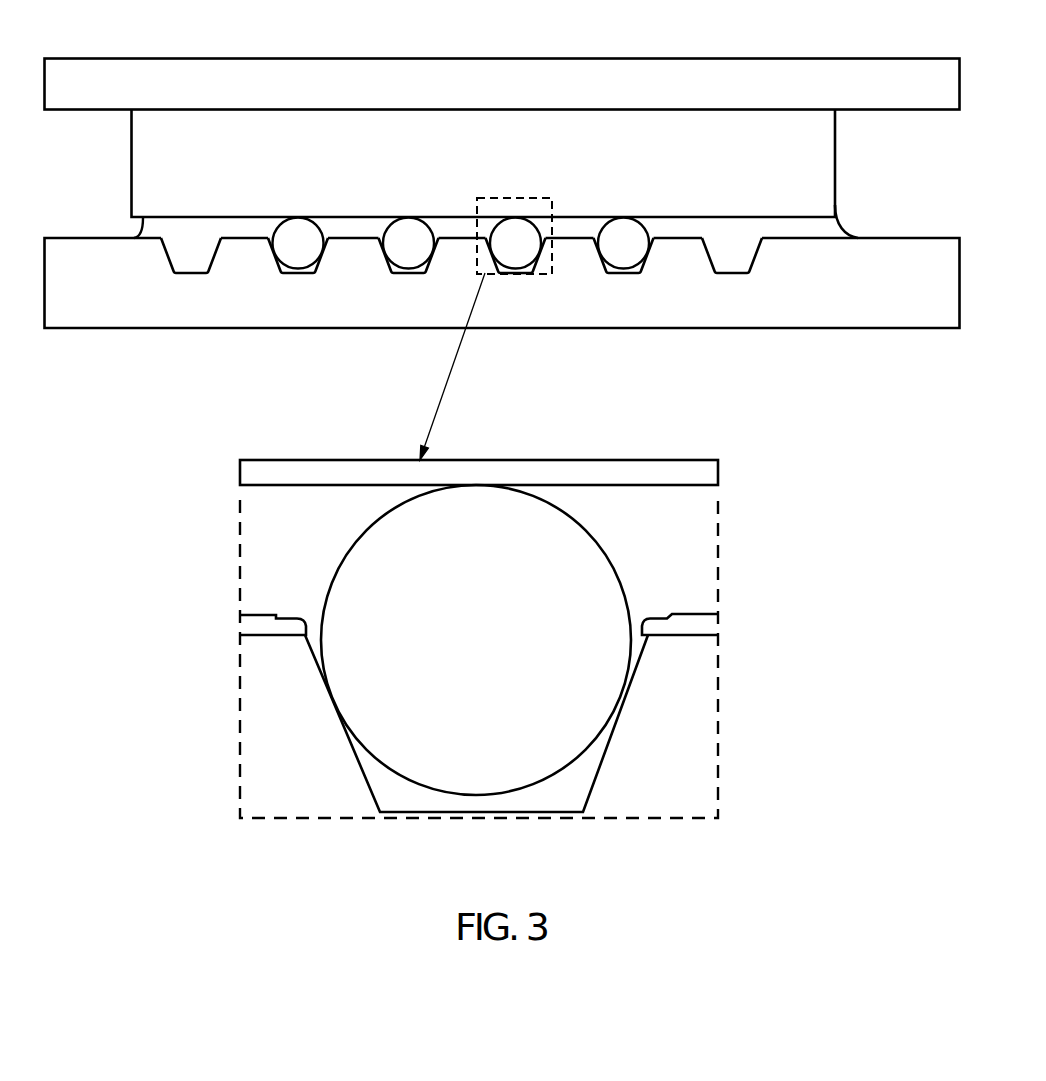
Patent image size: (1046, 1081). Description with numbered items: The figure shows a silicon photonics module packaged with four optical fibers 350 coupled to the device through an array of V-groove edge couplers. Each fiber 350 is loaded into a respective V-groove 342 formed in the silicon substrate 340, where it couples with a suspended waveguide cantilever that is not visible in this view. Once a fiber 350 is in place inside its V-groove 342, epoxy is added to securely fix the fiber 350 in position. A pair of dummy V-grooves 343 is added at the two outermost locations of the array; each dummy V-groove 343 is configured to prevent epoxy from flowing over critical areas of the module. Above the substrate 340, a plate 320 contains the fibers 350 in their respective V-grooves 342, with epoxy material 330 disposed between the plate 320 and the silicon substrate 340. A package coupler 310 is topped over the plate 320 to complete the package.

The package coupler 310 is at (600, 77).
The plate 320 is at (388, 143).
The epoxy material 330 is at (825, 232).
The silicon substrate 340 is at (853, 322).
The V-groove 342 is at (645, 263).
The dummy V-groove 343 is at (742, 255).
The fiber 350 is at (535, 525).